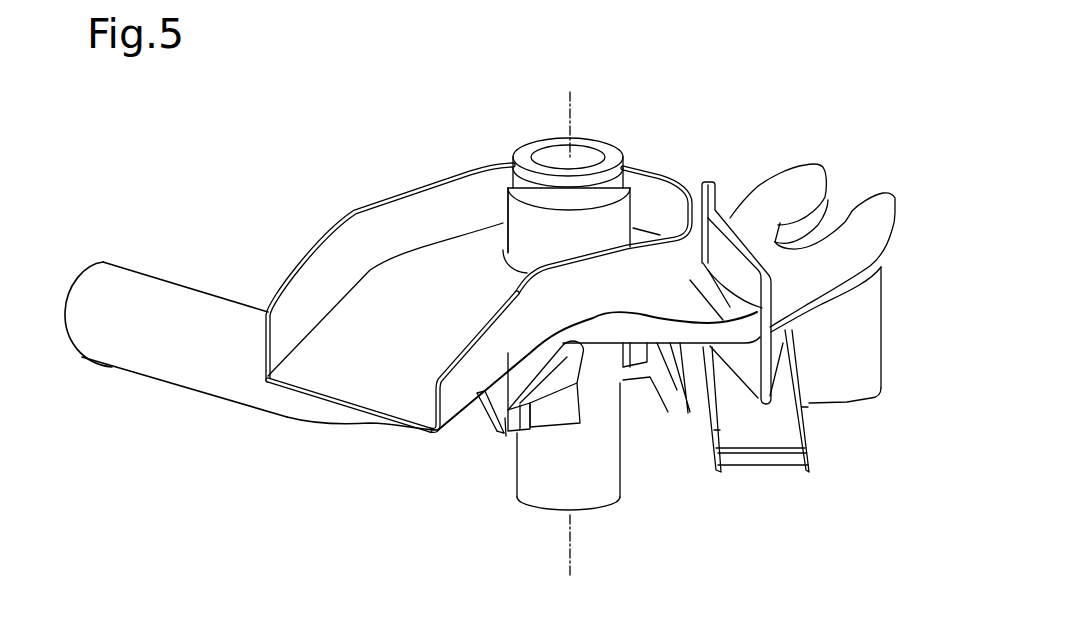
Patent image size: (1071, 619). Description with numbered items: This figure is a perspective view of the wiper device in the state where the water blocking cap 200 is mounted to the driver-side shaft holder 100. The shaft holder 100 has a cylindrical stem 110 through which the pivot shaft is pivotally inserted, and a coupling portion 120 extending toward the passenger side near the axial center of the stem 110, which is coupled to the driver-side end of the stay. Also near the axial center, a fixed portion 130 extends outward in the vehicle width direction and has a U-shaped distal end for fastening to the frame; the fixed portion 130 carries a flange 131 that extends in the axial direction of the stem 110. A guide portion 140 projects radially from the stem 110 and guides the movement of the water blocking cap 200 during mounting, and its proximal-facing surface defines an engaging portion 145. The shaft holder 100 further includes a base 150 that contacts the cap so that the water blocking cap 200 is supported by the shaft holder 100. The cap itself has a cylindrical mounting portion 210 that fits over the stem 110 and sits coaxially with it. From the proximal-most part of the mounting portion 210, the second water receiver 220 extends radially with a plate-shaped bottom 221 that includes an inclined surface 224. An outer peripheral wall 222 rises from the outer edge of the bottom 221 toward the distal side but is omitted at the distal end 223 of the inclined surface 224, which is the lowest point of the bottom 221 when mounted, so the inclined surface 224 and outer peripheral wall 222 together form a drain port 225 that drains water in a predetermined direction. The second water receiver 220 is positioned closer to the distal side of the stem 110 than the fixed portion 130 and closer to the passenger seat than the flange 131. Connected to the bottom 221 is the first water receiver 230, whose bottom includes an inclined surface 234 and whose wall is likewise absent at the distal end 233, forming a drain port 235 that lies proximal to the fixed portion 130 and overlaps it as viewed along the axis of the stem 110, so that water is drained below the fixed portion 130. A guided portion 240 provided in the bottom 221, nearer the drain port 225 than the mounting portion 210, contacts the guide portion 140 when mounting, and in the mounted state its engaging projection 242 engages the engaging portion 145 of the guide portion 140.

The driver-side shaft holder 100 is at (522, 517).
The stem 110 is at (607, 142).
The coupling portion 120 is at (251, 371).
The fixed portion 130 is at (895, 197).
The flange 131 is at (731, 242).
The guide portion 140 is at (565, 425).
The engaging portion 145 is at (515, 435).
The base 150 is at (637, 380).
The water blocking cap 200 is at (506, 305).
The mounting portion 210 is at (507, 197).
The second water receiver 220 is at (293, 284).
The bottom 221 is at (440, 255).
The outer peripheral wall 222 is at (467, 377).
The distal end 223 is at (335, 410).
The inclined surface 224 is at (413, 400).
The drain port 225 is at (292, 408).
The first water receiver 230 is at (788, 433).
The distal end 233 is at (777, 458).
The inclined surface 234 is at (748, 440).
The drain port 235 is at (849, 421).
The guided portion 240 is at (483, 410).
The engaging projection 242 is at (507, 435).